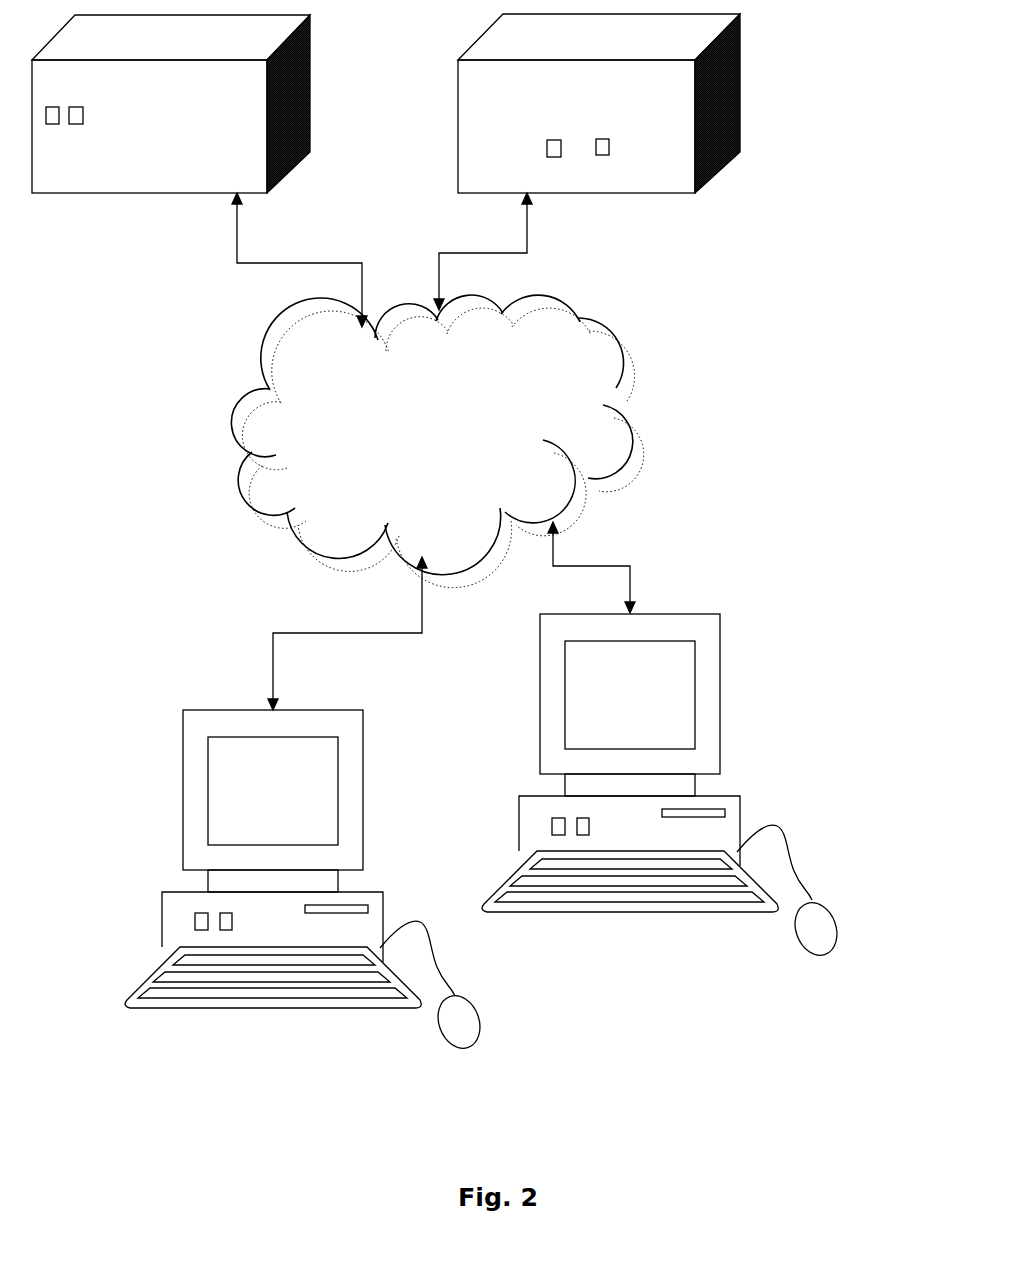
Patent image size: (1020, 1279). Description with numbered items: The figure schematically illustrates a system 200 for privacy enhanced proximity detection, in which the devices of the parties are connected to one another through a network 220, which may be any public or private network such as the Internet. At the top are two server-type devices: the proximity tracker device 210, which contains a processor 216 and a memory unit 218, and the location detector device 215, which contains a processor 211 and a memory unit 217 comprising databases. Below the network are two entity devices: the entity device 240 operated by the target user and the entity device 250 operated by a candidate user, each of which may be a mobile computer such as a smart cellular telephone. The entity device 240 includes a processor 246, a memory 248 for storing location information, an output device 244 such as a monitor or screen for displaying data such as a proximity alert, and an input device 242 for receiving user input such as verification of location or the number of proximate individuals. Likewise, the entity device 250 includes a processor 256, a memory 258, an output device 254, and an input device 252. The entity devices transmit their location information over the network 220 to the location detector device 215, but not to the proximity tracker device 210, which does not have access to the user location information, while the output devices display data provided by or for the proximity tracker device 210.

The system 200 is at (805, 60).
The proximity tracker device 210 is at (171, 119).
The processor 211 is at (554, 157).
The location detector device 215 is at (599, 138).
The processor 216 is at (52, 124).
The memory unit 217 is at (602, 155).
The memory unit 218 is at (76, 106).
The network 220 is at (617, 382).
The entity device 240 is at (308, 841).
The input device 242 is at (466, 1000).
The output device 244 is at (273, 791).
The processor 246 is at (195, 922).
The memory unit 248 is at (217, 913).
The entity device 250 is at (667, 747).
The input device 252 is at (825, 913).
The output device 254 is at (630, 695).
The processor 256 is at (552, 828).
The memory unit 258 is at (577, 819).